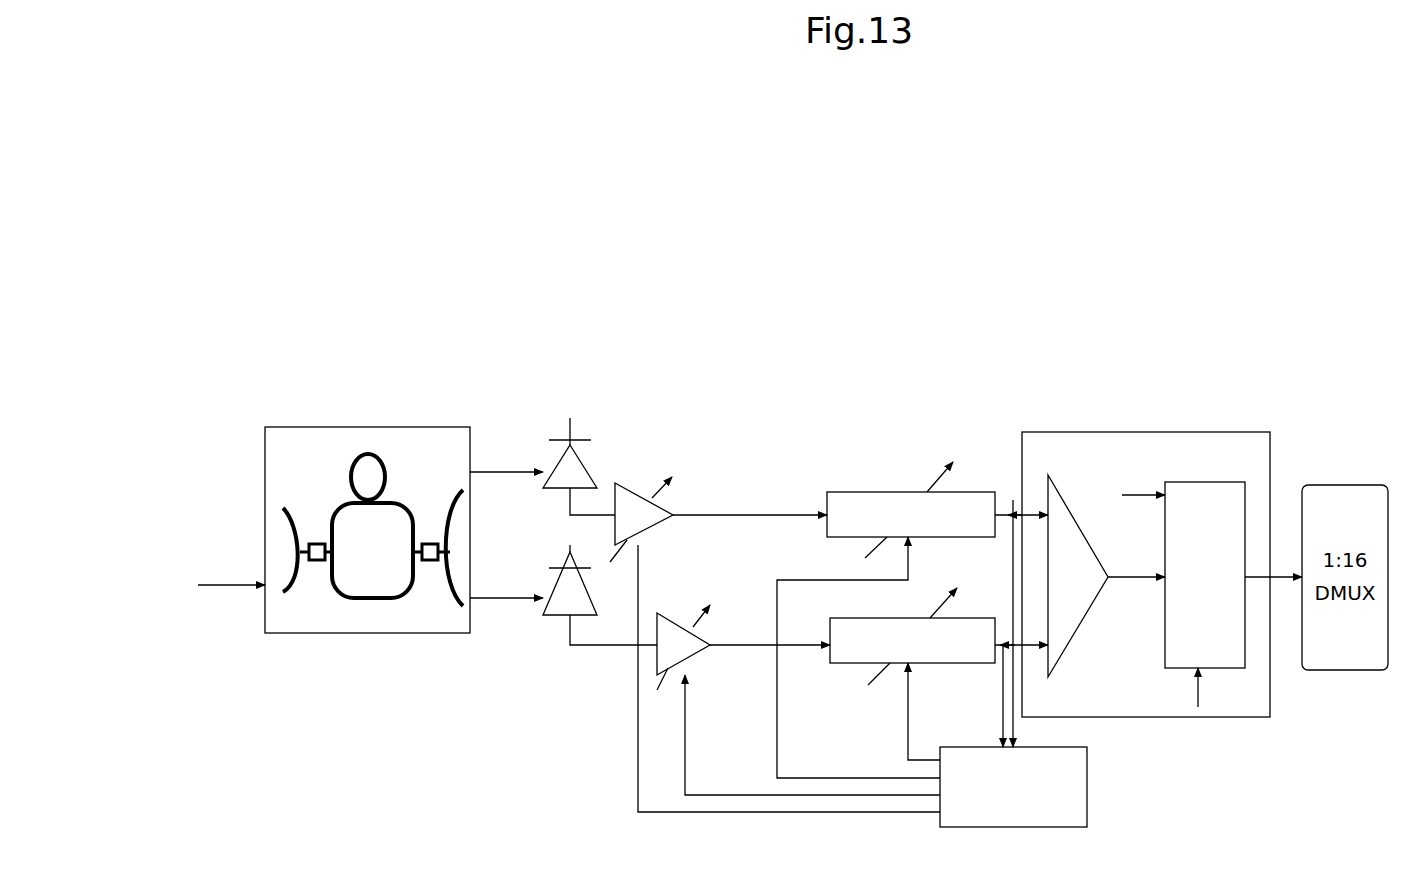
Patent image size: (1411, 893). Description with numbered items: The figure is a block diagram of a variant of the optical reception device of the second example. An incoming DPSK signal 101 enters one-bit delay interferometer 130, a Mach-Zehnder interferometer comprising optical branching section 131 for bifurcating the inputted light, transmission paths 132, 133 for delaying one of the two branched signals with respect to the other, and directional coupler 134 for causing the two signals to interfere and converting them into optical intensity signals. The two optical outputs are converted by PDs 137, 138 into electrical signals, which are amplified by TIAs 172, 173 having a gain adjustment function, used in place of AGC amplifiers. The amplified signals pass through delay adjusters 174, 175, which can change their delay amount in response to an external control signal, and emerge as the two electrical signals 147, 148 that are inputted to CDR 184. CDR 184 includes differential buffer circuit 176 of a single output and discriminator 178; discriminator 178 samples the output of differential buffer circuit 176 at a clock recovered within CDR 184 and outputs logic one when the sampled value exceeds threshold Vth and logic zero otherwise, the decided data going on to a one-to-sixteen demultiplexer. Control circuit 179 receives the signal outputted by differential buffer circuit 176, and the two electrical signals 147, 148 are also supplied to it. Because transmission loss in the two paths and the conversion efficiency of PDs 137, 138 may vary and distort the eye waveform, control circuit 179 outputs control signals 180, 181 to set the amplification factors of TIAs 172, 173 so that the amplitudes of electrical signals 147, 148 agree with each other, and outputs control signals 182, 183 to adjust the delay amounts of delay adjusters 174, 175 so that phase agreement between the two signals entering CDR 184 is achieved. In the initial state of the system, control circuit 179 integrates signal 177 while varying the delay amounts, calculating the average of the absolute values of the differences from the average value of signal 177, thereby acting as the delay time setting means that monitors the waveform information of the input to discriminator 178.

The DPSK signal 101 is at (227, 583).
The one-bit delay interferometer 130 is at (417, 427).
The optical branching section 131 is at (312, 562).
The transmission path 132 is at (354, 472).
The transmission path 133 is at (366, 600).
The directional coupler 134 is at (428, 562).
The PD 137 is at (588, 472).
The PD 138 is at (548, 617).
The electrical signal 147 is at (1007, 505).
The electrical signal 148 is at (1006, 633).
The TIA 172 is at (640, 490).
The TIA 173 is at (667, 613).
The delay adjuster 174 is at (873, 490).
The delay adjuster 175 is at (888, 618).
The differential buffer circuit 176 is at (1072, 517).
The signal 177 is at (1113, 575).
The discriminator 178 is at (1193, 482).
The control circuit 179 is at (1007, 830).
The control signal 180 is at (638, 746).
The control signal 181 is at (685, 757).
The control signal 182 is at (777, 760).
The control signal 183 is at (908, 718).
The CDR 184 is at (1163, 432).